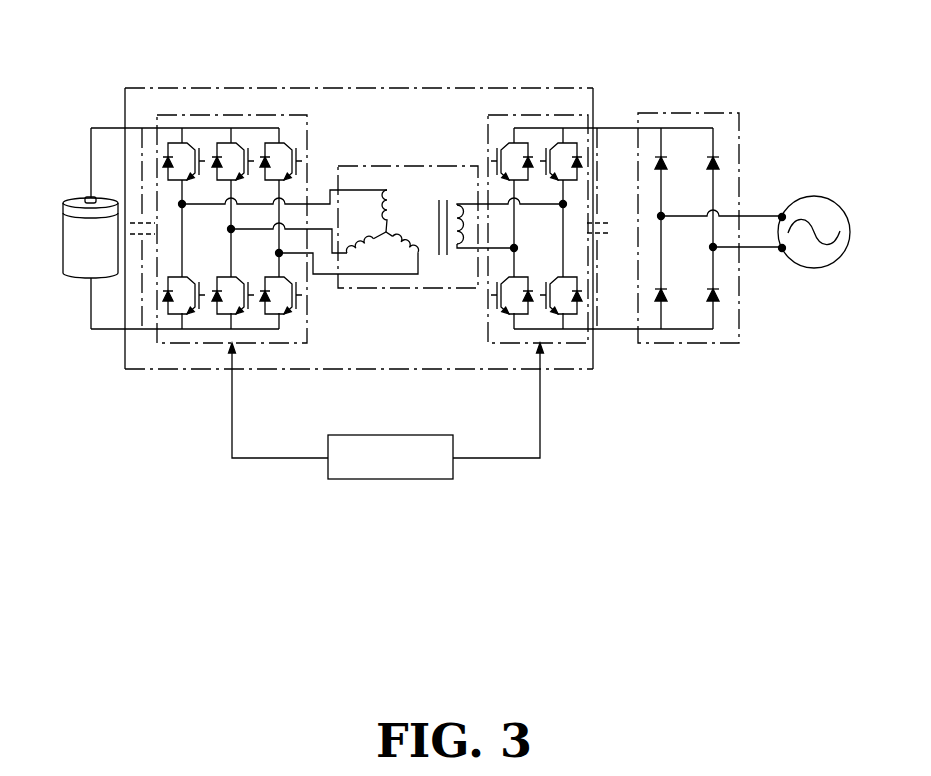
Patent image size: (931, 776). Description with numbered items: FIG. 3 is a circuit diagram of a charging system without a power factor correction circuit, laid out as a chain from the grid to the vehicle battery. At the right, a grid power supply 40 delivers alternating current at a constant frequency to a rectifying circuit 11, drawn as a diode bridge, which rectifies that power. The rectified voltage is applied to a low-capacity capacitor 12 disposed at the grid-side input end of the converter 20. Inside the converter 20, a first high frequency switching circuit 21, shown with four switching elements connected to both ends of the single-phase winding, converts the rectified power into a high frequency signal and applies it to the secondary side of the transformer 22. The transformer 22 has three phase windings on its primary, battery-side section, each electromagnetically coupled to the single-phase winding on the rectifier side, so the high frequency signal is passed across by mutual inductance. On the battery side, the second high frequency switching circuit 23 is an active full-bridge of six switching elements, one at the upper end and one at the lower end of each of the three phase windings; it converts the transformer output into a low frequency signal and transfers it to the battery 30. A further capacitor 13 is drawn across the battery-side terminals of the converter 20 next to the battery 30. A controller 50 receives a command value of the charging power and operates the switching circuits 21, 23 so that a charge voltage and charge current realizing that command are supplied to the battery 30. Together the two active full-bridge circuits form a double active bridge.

The rectifying circuit 11 is at (670, 113).
The capacitor 12 is at (607, 220).
The capacitor 13 is at (132, 220).
The converter 20 is at (215, 87).
The first high frequency switching circuit 21 is at (511, 115).
The transformer 22 is at (405, 166).
The second high frequency switching circuit 23 is at (280, 115).
The battery 30 is at (73, 198).
The grid power supply 40 is at (807, 197).
The controller 50 is at (391, 479).